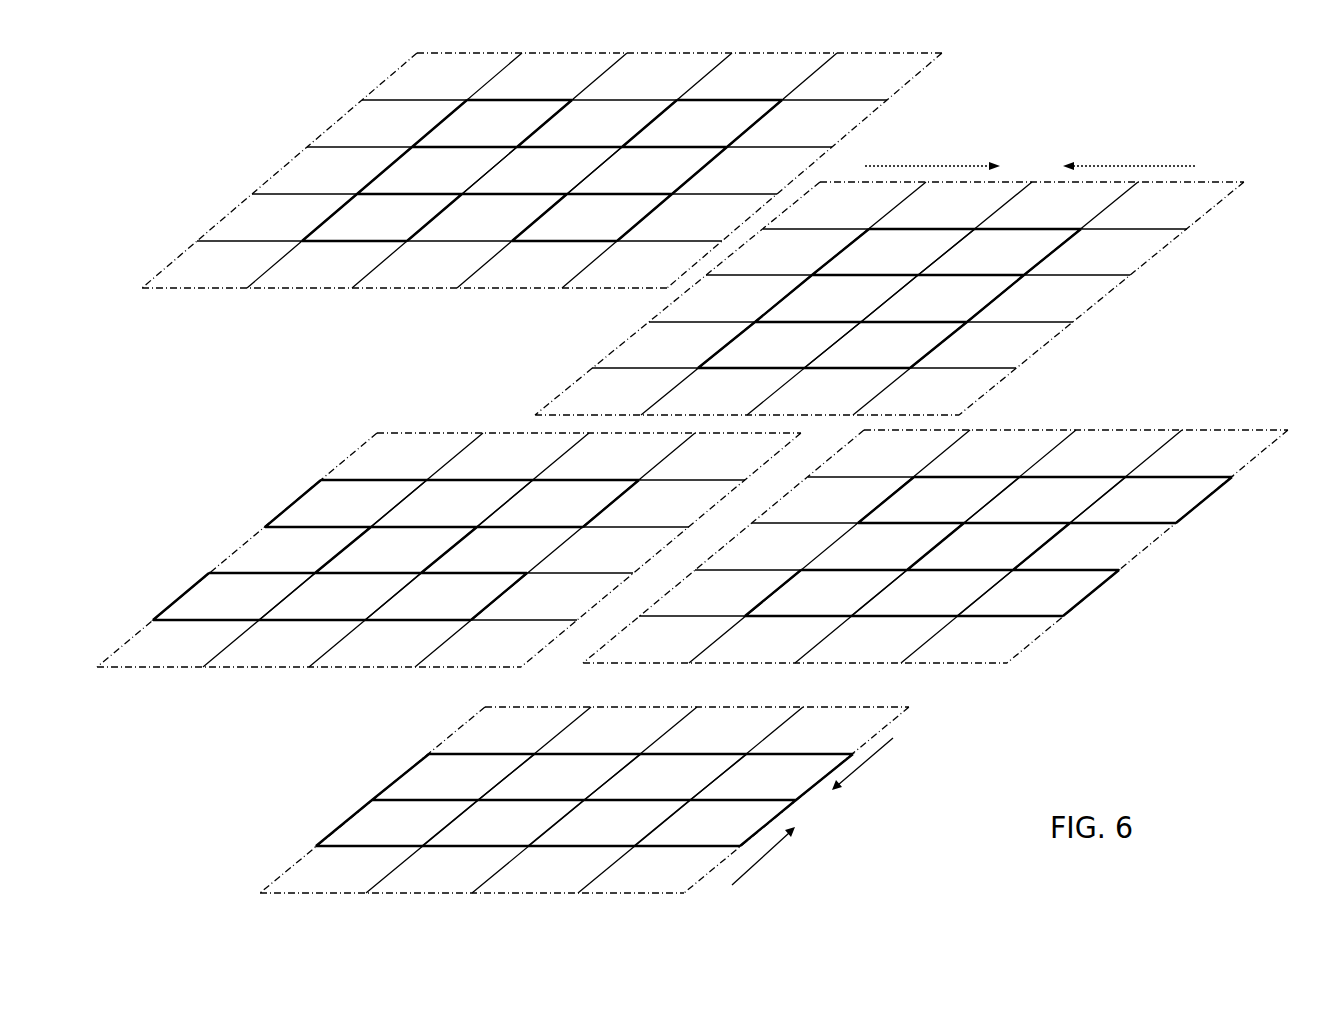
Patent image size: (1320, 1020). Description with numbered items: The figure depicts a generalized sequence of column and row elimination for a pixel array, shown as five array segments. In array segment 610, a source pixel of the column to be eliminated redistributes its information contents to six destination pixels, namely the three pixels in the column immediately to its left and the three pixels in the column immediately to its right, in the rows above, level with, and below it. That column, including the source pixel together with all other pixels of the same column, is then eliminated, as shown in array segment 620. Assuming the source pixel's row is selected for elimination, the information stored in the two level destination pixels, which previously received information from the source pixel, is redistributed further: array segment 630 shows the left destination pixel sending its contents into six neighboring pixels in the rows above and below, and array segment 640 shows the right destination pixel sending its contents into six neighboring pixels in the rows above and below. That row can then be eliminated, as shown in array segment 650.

The array segment 610 is at (297, 113).
The array segment 620 is at (1219, 133).
The array segment 630 is at (304, 460).
The array segment 640 is at (1276, 404).
The array segment 650 is at (352, 788).